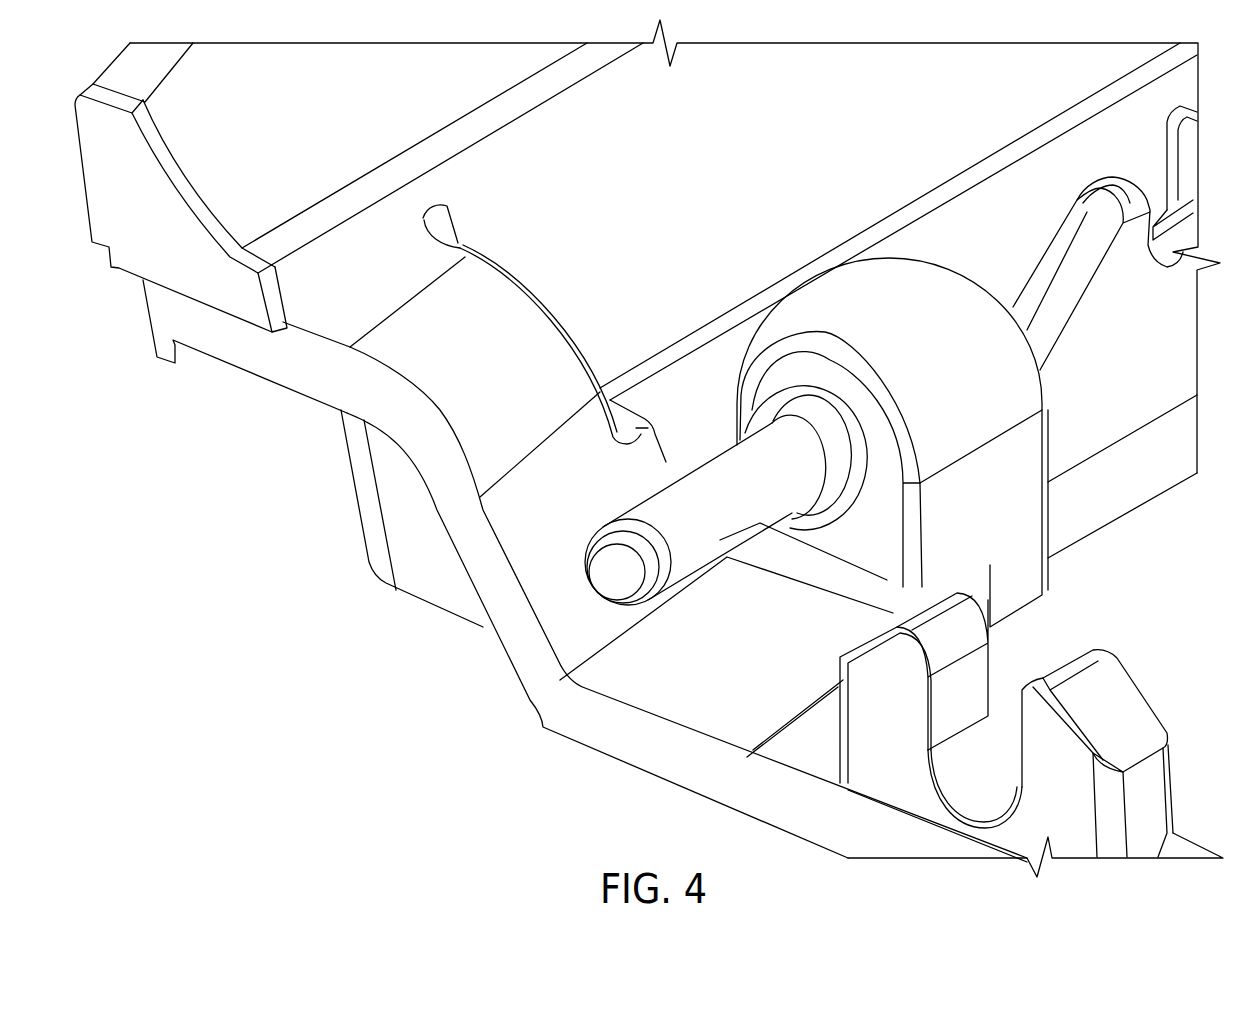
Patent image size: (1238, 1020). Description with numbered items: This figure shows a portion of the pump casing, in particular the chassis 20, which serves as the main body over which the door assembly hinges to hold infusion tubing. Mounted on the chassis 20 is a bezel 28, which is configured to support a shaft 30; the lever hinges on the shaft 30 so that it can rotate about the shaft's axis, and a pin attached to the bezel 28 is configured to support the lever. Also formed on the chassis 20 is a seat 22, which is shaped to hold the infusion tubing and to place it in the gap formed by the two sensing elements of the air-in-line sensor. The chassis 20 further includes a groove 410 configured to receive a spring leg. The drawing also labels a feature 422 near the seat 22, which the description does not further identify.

The chassis 20 is at (775, 163).
The bezel 28 is at (948, 344).
The shaft 30 is at (700, 548).
The seat 22 is at (899, 727).
The slot 422 is at (981, 783).
The groove 410 is at (567, 662).